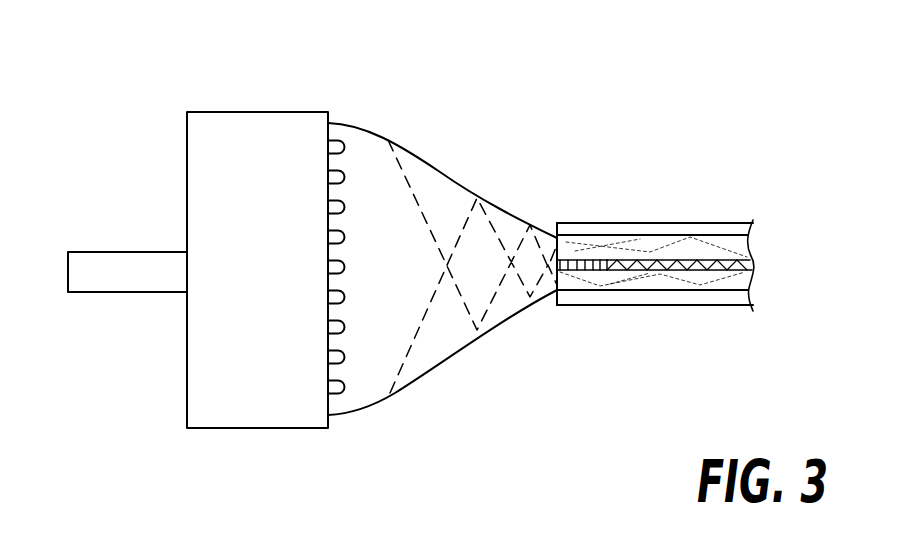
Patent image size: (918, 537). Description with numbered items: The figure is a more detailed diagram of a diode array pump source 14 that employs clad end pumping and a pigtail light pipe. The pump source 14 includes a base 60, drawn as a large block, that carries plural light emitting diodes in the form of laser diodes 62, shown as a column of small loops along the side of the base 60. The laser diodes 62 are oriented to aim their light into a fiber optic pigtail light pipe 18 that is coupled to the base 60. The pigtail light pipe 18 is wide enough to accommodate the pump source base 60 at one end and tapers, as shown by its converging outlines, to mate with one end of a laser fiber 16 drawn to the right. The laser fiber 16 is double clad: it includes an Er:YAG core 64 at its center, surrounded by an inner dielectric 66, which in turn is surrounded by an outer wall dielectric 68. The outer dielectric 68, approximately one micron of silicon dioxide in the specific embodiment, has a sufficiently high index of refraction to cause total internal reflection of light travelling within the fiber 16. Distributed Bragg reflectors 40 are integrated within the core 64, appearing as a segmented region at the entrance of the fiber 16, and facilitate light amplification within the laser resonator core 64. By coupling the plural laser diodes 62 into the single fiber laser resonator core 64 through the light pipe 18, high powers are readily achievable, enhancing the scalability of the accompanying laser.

The base 60 is at (259, 86).
The laser diodes 62 is at (328, 297).
The pigtail light pipe 18 is at (370, 125).
The diode array pump source 14 is at (463, 118).
The laser fiber 16 is at (655, 255).
The outer wall dielectric 68 is at (720, 230).
The inner dielectric 66 is at (738, 284).
The Er:YAG core 64 is at (677, 268).
The distributed Bragg reflectors 40 is at (607, 270).